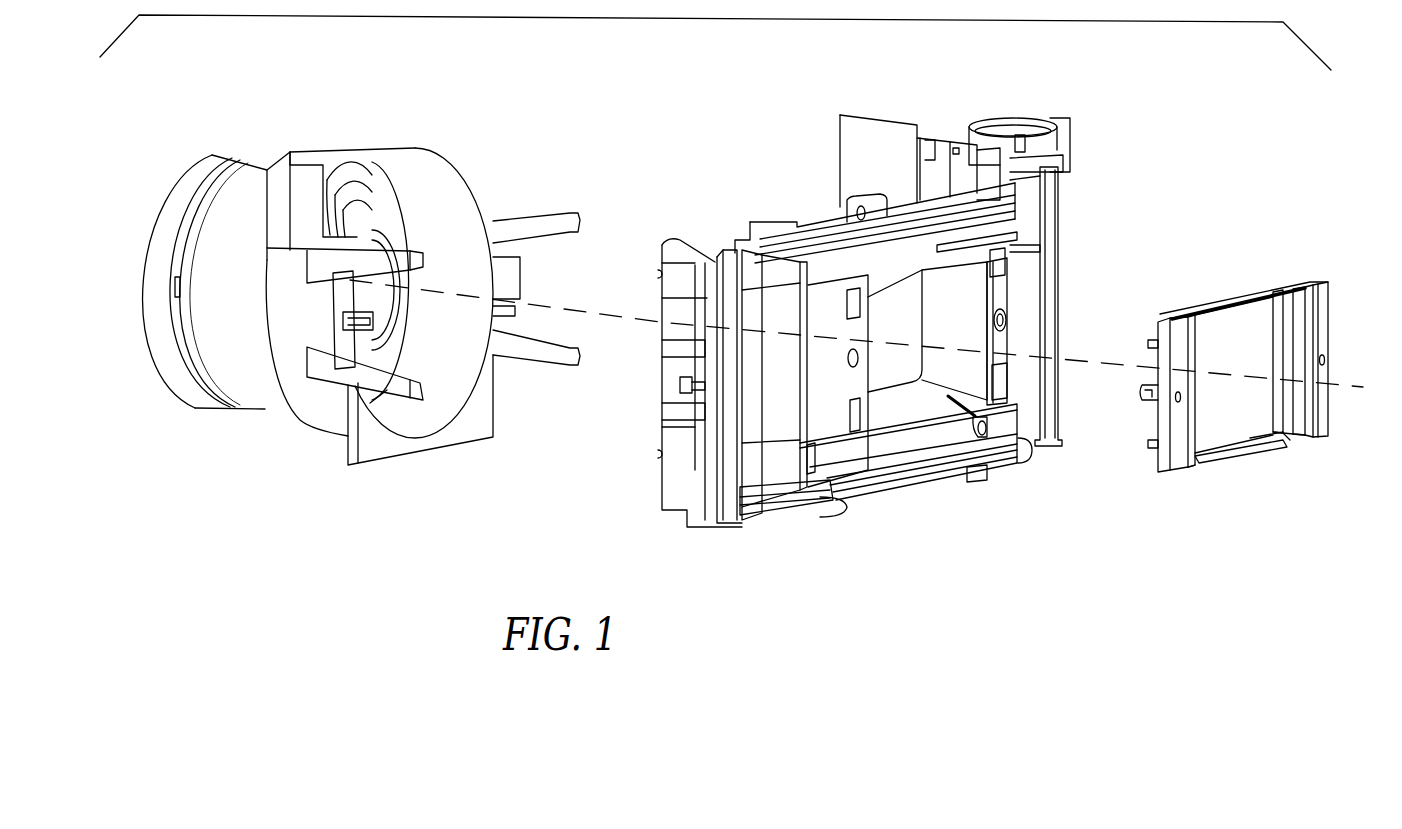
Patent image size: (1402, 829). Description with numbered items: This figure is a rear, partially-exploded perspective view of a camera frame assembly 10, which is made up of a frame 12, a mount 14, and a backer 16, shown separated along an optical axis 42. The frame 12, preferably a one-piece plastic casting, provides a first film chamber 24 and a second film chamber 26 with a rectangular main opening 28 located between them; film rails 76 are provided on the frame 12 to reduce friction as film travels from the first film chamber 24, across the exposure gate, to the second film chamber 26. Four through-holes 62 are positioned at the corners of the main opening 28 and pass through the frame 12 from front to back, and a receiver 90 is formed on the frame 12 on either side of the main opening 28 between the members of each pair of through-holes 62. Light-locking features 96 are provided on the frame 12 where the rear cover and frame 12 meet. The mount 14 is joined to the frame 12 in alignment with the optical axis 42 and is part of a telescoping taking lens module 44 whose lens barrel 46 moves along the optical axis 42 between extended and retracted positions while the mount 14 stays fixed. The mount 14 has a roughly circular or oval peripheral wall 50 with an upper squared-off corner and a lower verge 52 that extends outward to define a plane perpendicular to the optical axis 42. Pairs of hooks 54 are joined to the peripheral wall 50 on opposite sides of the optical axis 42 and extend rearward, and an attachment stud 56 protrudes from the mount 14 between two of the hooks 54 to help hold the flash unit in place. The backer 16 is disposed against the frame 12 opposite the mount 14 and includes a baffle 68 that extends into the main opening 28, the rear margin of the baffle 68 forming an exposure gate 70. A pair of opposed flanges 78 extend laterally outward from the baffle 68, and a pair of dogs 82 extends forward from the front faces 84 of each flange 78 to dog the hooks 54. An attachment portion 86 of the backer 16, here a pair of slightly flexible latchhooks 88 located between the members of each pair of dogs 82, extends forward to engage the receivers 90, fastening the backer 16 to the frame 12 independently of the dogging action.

The camera frame assembly 10 is at (698, 22).
The frame 12 is at (889, 350).
The mount 14 is at (372, 309).
The backer 16 is at (1240, 354).
The first film chamber 24 is at (747, 273).
The second film chamber 26 is at (1034, 212).
The main opening 28 is at (981, 430).
The optical axis 42 is at (558, 312).
The lens module 44 is at (185, 415).
The lens barrel 46 is at (241, 404).
The peripheral wall 50 is at (450, 201).
The lower verge 52 is at (382, 462).
The hooks 54 is at (508, 341).
The attachment stud 56 is at (340, 288).
The through-holes 62 is at (860, 309).
The baffle 68 is at (1227, 447).
The exposure gate 70 is at (1280, 441).
The film rails 76 is at (810, 410).
The flanges 78 is at (1322, 320).
The dogs 82 is at (1148, 344).
The front faces 84 is at (1322, 418).
The attachment portion 86 is at (1190, 313).
The latchhooks 88 is at (1190, 313).
The receivers 90 is at (851, 365).
The light-locking features 96 is at (832, 226).